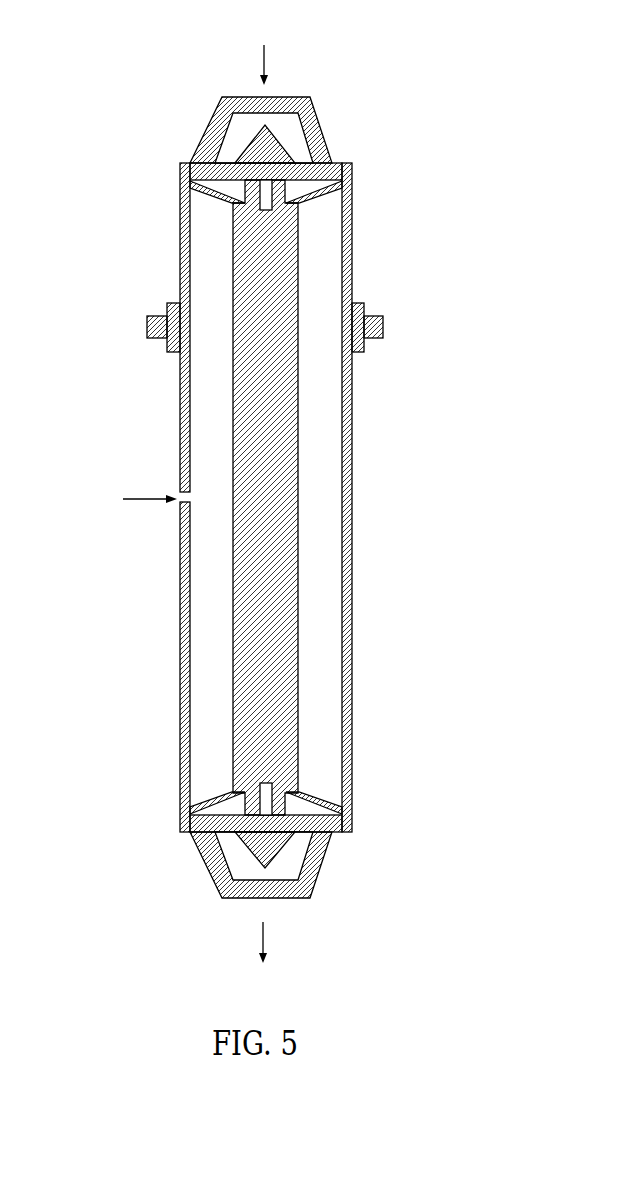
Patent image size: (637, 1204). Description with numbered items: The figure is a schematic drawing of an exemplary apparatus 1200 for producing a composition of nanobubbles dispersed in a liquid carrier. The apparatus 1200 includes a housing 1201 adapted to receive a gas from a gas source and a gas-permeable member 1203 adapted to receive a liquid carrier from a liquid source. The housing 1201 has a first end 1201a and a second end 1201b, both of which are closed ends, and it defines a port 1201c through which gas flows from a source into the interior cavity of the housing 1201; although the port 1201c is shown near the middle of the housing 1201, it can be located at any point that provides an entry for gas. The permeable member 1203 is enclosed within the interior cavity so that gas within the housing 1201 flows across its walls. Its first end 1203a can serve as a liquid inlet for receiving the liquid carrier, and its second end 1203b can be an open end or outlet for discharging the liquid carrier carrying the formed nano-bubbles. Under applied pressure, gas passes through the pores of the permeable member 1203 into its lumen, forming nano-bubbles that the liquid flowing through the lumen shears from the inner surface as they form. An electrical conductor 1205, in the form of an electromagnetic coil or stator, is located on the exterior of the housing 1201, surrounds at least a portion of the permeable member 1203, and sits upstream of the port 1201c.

The apparatus 1200 is at (99, 108).
The housing 1201 is at (378, 522).
The first end 1201a is at (350, 164).
The second end 1201b is at (347, 830).
The port 1201c is at (180, 503).
The gas-permeable member 1203 is at (298, 680).
The first end 1203a is at (250, 142).
The second end 1203b is at (248, 849).
The electrical conductor 1205 is at (385, 327).